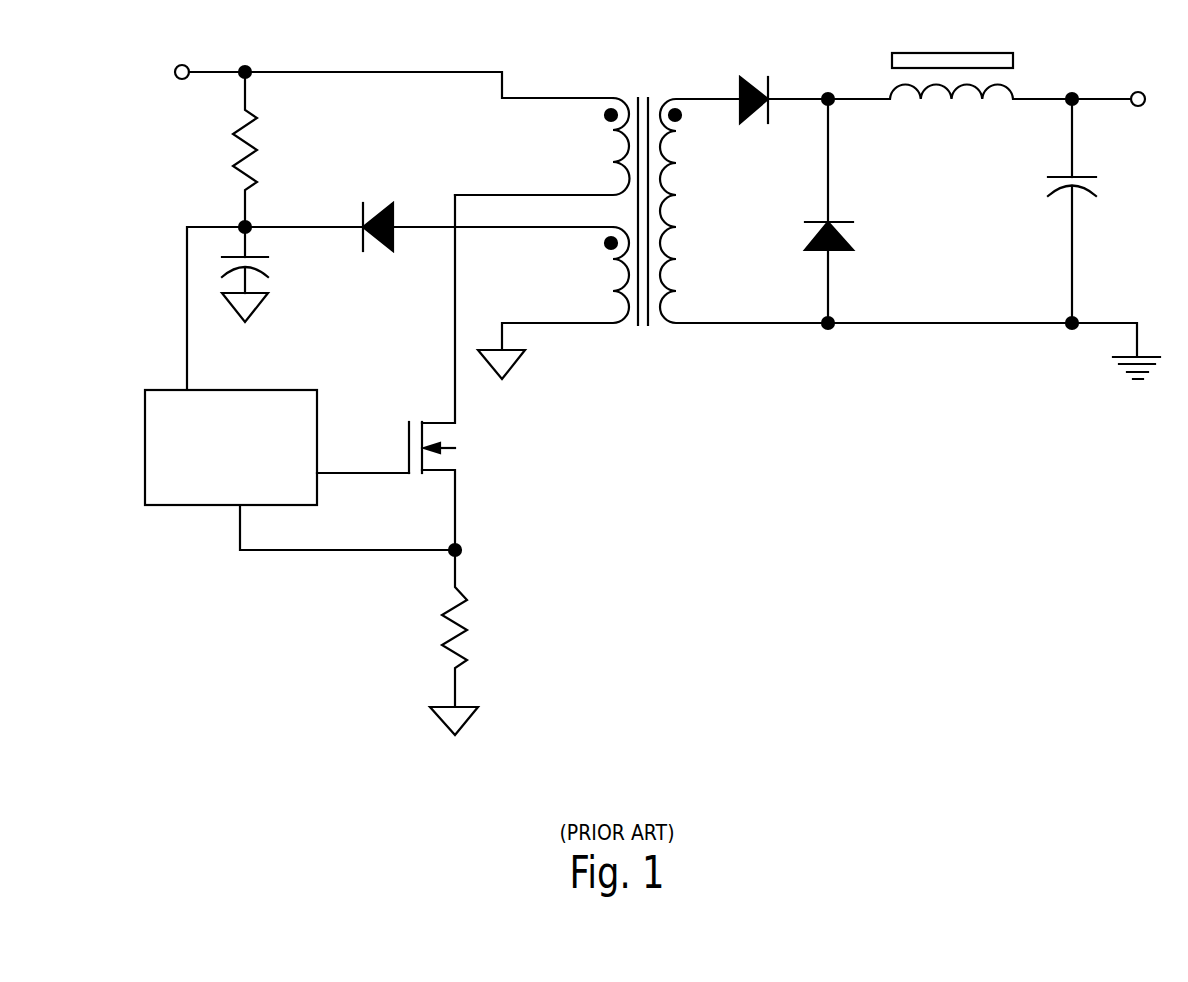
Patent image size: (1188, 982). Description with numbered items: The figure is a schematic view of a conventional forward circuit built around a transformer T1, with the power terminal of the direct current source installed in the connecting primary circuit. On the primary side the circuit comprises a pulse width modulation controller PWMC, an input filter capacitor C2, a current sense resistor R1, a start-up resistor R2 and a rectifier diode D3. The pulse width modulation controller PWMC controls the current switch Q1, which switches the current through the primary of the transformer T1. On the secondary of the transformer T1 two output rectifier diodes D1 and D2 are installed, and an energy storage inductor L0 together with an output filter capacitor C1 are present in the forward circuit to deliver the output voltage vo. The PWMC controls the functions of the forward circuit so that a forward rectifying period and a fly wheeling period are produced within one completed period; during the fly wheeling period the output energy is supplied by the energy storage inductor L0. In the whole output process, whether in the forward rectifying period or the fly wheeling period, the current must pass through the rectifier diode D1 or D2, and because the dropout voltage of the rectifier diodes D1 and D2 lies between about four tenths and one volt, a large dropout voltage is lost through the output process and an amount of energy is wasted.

The start-up resistor R2 is at (225, 149).
The rectifier diode D3 is at (429, 207).
The input filter capacitor C2 is at (264, 274).
The transformer T1 is at (641, 218).
The output rectifier diode D1 is at (784, 78).
The output rectifier diode D2 is at (848, 211).
The energy storage inductor L0 is at (950, 55).
The output filter capacitor C1 is at (1092, 211).
The output voltage terminal vo is at (1113, 79).
The pulse width modulation controller PWMC is at (300, 470).
The current switch Q1 is at (450, 372).
The current sense resistor R1 is at (466, 642).